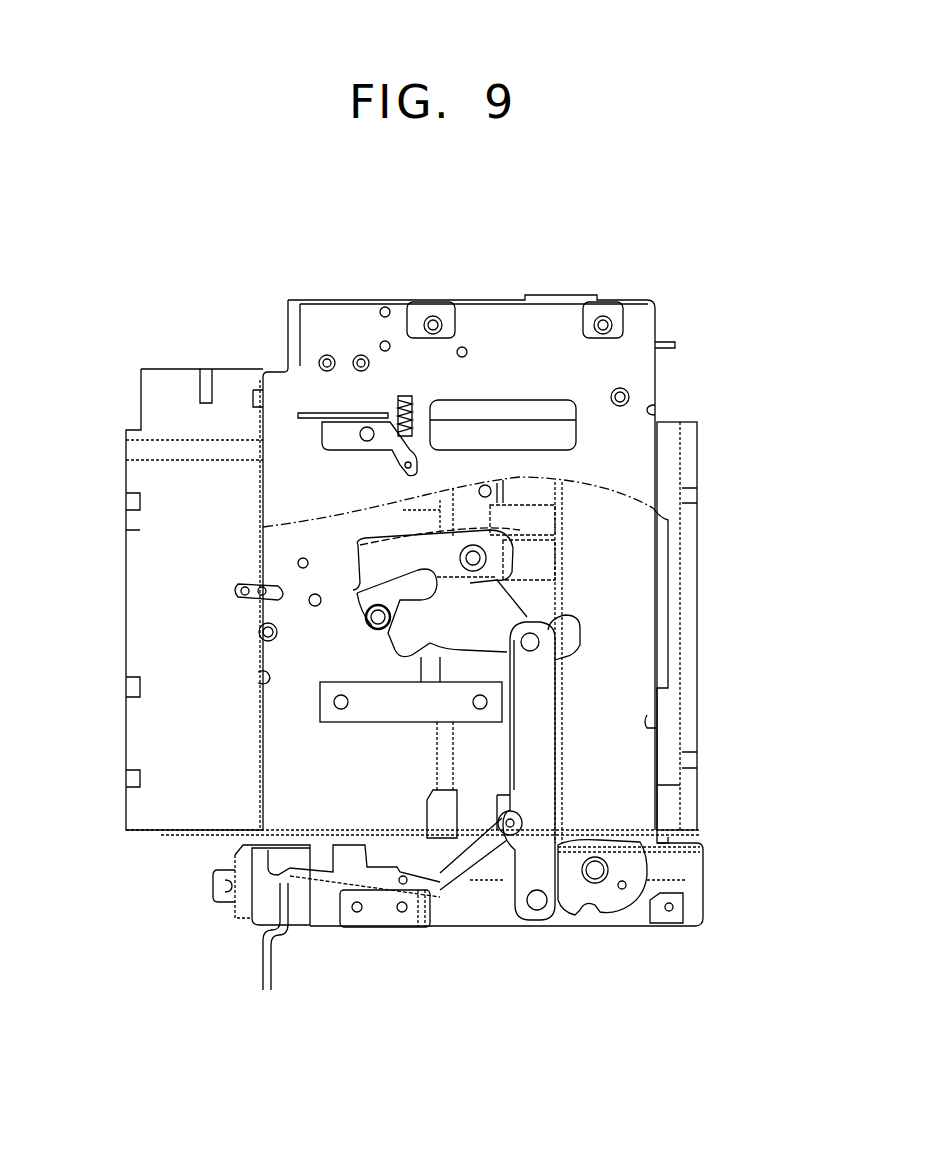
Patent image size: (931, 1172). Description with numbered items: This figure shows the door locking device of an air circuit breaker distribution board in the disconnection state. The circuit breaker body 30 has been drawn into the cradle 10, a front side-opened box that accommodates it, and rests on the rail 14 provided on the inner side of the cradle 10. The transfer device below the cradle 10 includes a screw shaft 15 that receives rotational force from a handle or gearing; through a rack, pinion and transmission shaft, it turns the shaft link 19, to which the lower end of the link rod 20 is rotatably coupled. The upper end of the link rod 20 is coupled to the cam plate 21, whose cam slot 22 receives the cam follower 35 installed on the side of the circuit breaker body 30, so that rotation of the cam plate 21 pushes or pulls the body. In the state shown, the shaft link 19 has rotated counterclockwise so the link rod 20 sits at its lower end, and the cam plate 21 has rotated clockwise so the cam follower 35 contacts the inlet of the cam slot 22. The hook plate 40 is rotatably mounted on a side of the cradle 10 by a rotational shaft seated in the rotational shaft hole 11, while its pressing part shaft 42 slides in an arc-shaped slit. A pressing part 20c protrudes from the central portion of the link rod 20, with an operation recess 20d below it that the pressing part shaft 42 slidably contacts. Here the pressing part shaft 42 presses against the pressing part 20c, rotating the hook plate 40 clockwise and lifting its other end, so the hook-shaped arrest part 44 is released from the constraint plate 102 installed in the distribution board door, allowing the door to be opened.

The cradle 10 is at (655, 368).
The rotational shaft hole 11 is at (648, 462).
The circuit breaker body 30 is at (140, 530).
The cam slot 22 is at (448, 578).
The cam plate 21 is at (498, 608).
The cam follower 35 is at (366, 622).
The rail 14 is at (310, 704).
The link rod 20 is at (544, 700).
The pressing part 20c is at (505, 807).
The operation recess 20d is at (608, 868).
The shaft link 19 is at (585, 898).
The pressing part shaft 42 is at (510, 836).
The arrest part 44 is at (270, 855).
The screw shaft 15 is at (214, 884).
The constraint plate 102 is at (262, 965).
The hook plate 40 is at (420, 927).